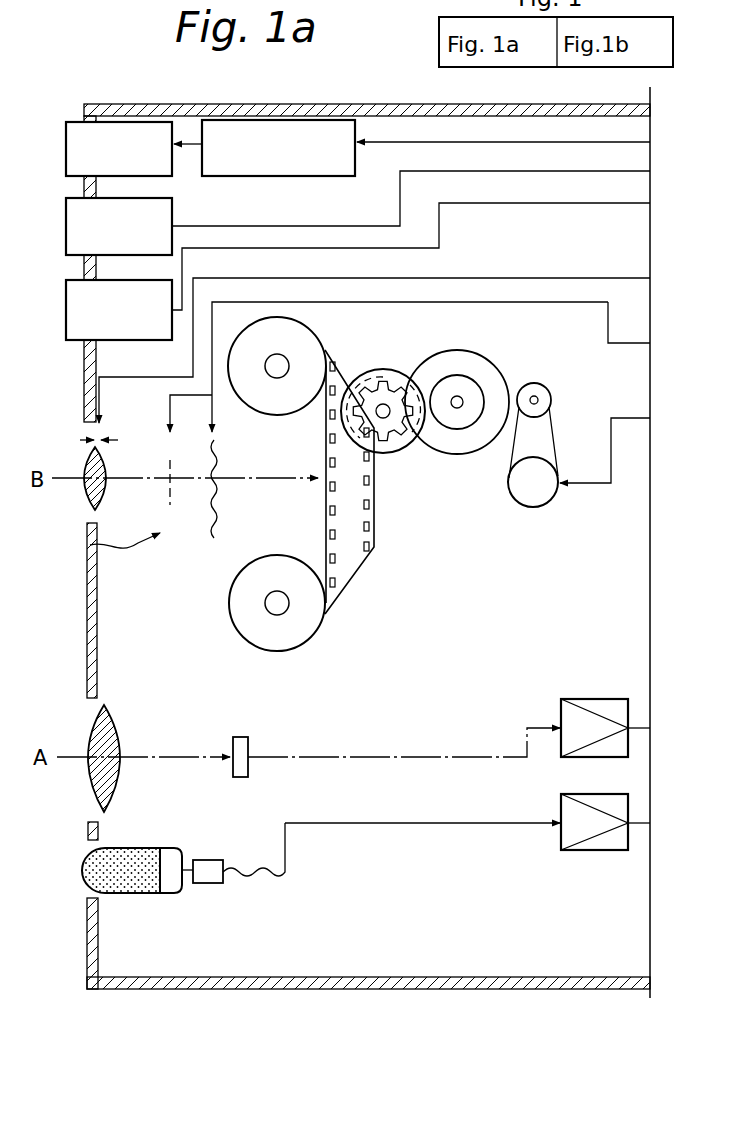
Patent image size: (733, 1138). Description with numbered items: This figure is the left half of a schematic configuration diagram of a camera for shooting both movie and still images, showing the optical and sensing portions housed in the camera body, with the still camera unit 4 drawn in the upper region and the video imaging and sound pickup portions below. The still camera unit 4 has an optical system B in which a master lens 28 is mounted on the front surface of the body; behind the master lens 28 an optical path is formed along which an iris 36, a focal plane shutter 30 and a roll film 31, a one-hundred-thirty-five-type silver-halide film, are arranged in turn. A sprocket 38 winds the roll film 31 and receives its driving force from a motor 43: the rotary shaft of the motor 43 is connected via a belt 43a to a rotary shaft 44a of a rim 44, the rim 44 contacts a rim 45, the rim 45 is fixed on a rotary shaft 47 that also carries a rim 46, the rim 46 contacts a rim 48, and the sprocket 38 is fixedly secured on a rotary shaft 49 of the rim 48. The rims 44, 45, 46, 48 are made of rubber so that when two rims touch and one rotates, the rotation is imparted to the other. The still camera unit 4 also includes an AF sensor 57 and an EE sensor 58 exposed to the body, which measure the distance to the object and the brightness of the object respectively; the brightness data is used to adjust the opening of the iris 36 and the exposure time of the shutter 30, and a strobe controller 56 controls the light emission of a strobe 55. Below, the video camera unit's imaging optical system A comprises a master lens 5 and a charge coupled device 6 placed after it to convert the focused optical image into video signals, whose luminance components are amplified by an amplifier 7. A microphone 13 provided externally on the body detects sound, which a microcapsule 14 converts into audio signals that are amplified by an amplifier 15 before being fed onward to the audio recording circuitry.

The still camera unit 4 is at (87, 547).
The master lens 5 is at (120, 728).
The charge coupled device (CCD) 6 is at (250, 742).
The amplifier 7 is at (598, 698).
The microphone 13 is at (125, 850).
The microcapsule 14 is at (208, 858).
The amplifier 15 is at (595, 851).
The master lens 28 is at (85, 452).
The focal plane shutter 30 is at (216, 442).
The roll film 31 is at (321, 541).
The iris 36 is at (170, 467).
The sprocket 38 is at (384, 372).
The motor 43 is at (533, 508).
The belt 43a is at (570, 440).
The rim 44 is at (552, 398).
The rotary shaft 44a is at (537, 396).
The rim 45 is at (497, 358).
The rim 46 is at (470, 428).
The rotary shaft 47 is at (457, 410).
The rim 48 is at (412, 448).
The rotary shaft 49 is at (391, 442).
The strobe 55 is at (66, 151).
The strobe controller 56 is at (357, 128).
The AF sensor 57 is at (66, 229).
The EE sensor 58 is at (66, 311).